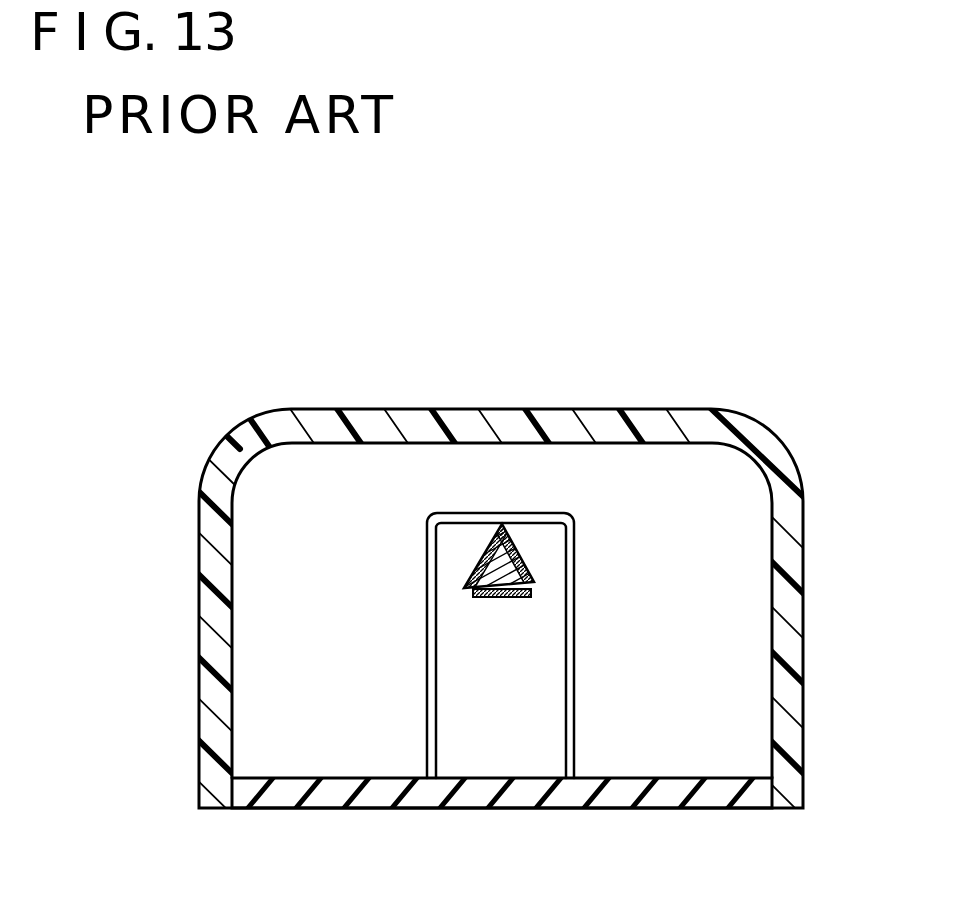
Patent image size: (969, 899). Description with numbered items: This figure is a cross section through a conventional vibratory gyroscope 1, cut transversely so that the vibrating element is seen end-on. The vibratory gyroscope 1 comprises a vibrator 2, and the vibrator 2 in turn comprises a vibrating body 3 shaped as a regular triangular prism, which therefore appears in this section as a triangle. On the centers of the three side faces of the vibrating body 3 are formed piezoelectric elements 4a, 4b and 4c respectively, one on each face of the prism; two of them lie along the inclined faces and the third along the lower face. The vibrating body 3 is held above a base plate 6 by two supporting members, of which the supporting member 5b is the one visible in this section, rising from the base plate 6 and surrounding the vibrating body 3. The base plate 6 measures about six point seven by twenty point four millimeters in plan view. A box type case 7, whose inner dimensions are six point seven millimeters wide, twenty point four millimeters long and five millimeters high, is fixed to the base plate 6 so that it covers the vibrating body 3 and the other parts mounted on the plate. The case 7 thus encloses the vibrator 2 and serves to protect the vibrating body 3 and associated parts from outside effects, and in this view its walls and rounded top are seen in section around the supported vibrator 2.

The vibratory gyroscope 1 is at (617, 335).
The vibrator 2 is at (509, 592).
The vibrating body 3 is at (517, 578).
The piezoelectric element 4a is at (478, 553).
The piezoelectric element 4b is at (530, 548).
The piezoelectric element 4c is at (495, 593).
The supporting member 5b is at (575, 725).
The base plate 6 is at (525, 795).
The case 7 is at (792, 652).